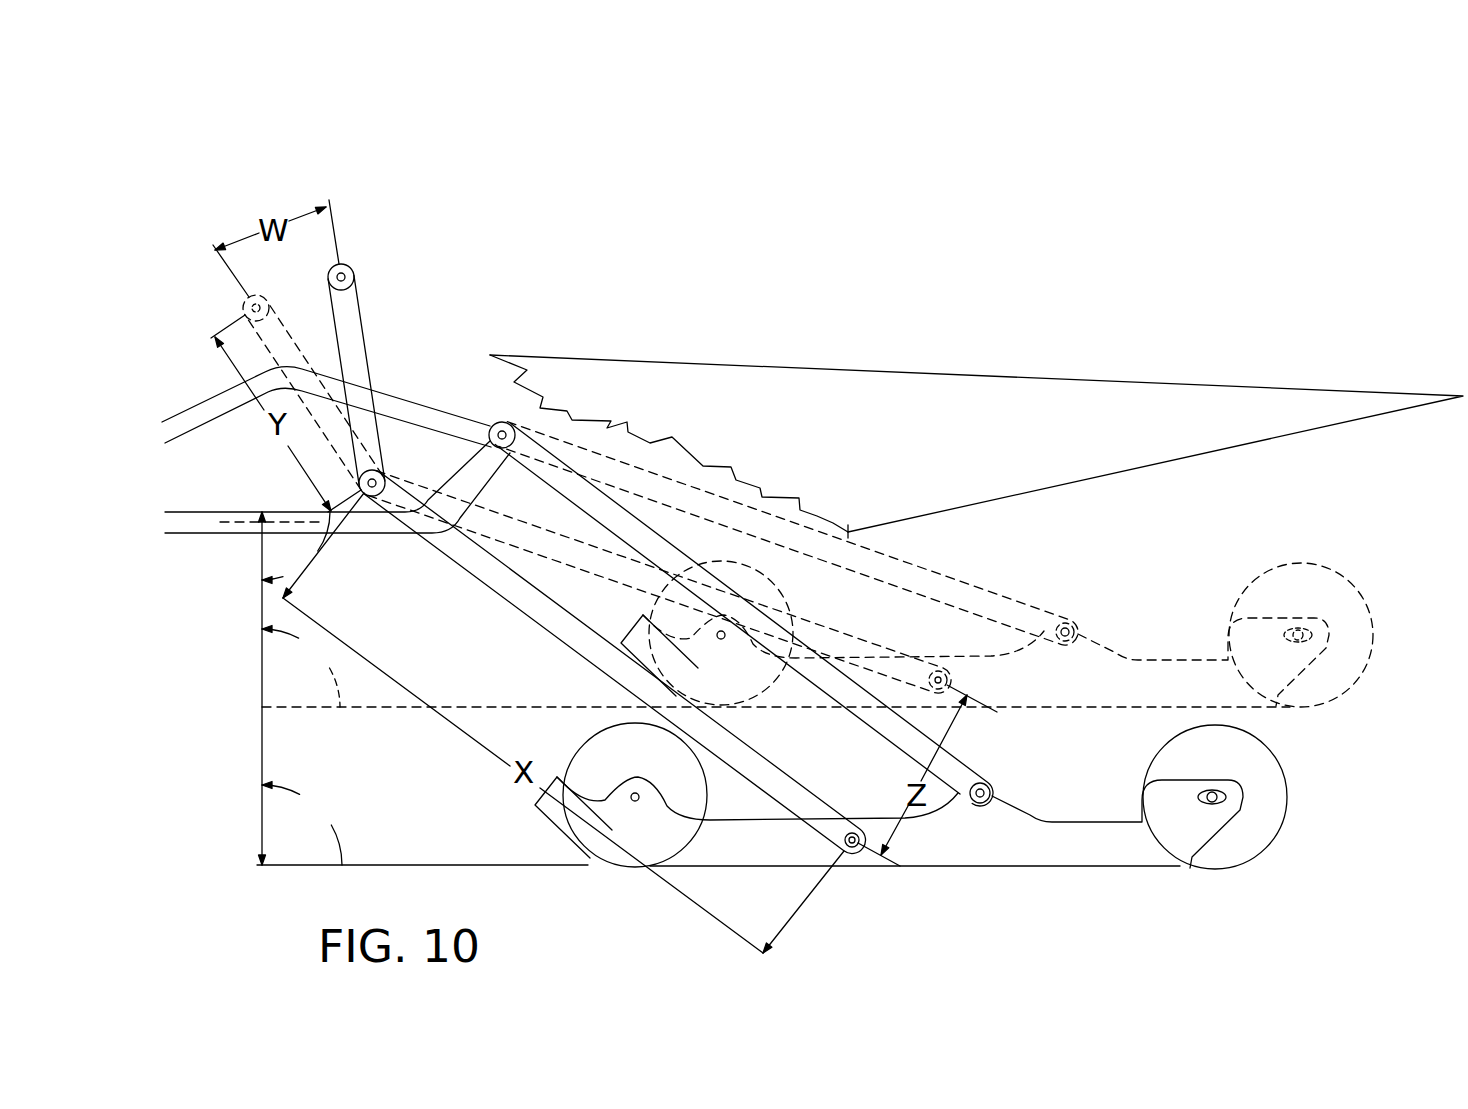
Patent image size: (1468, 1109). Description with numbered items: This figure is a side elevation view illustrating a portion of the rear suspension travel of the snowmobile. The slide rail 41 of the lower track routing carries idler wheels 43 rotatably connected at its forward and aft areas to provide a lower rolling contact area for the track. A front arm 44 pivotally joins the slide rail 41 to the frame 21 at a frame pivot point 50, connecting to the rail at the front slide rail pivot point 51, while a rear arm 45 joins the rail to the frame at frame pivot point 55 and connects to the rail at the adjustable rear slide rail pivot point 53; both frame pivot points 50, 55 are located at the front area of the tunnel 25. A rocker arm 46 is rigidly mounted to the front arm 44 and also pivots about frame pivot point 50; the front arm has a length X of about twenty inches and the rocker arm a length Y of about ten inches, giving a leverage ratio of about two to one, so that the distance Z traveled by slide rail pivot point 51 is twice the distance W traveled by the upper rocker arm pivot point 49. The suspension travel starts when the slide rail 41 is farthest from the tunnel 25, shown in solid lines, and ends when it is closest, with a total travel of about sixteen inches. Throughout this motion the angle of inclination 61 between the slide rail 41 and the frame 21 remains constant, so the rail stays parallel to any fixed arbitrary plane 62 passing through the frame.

The frame 21 is at (203, 528).
The tunnel 25 is at (807, 401).
The slide rail 41 is at (1035, 836).
The idler wheel 43 is at (648, 837).
The front arm 44 is at (527, 610).
The rear arm 45 is at (583, 503).
The rocker arm 46 is at (352, 343).
The upper rocker arm pivot point 49 is at (340, 277).
The frame pivot point 50 is at (371, 496).
The front slide rail pivot point 51 is at (855, 845).
The rear slide rail pivot point 53 is at (982, 790).
The frame pivot point 55 is at (515, 432).
The angle of inclination 61 is at (302, 688).
The arbitrary plane 62 is at (267, 511).